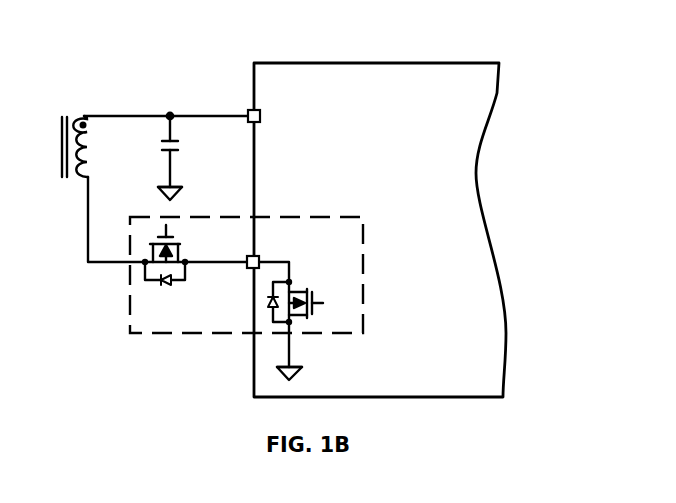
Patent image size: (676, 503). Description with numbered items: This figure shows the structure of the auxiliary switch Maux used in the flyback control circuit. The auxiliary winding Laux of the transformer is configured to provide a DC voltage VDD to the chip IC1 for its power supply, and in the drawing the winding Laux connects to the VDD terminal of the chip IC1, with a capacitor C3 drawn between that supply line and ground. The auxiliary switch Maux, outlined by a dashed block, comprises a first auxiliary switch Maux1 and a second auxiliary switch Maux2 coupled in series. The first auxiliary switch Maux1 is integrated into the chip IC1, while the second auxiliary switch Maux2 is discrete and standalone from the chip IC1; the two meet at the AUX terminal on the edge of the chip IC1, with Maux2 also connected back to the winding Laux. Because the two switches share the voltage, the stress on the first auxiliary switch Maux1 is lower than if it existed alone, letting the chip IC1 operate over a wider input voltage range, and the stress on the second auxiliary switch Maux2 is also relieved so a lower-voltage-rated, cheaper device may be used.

The chip IC1 is at (484, 63).
The auxiliary winding Laux is at (99, 146).
The capacitor C3 is at (185, 158).
The auxiliary switch Maux is at (293, 217).
The first auxiliary switch Maux1 is at (313, 322).
The second auxiliary switch Maux2 is at (170, 267).
The DC voltage VDD is at (232, 106).
The auxiliary pin AUX is at (231, 252).